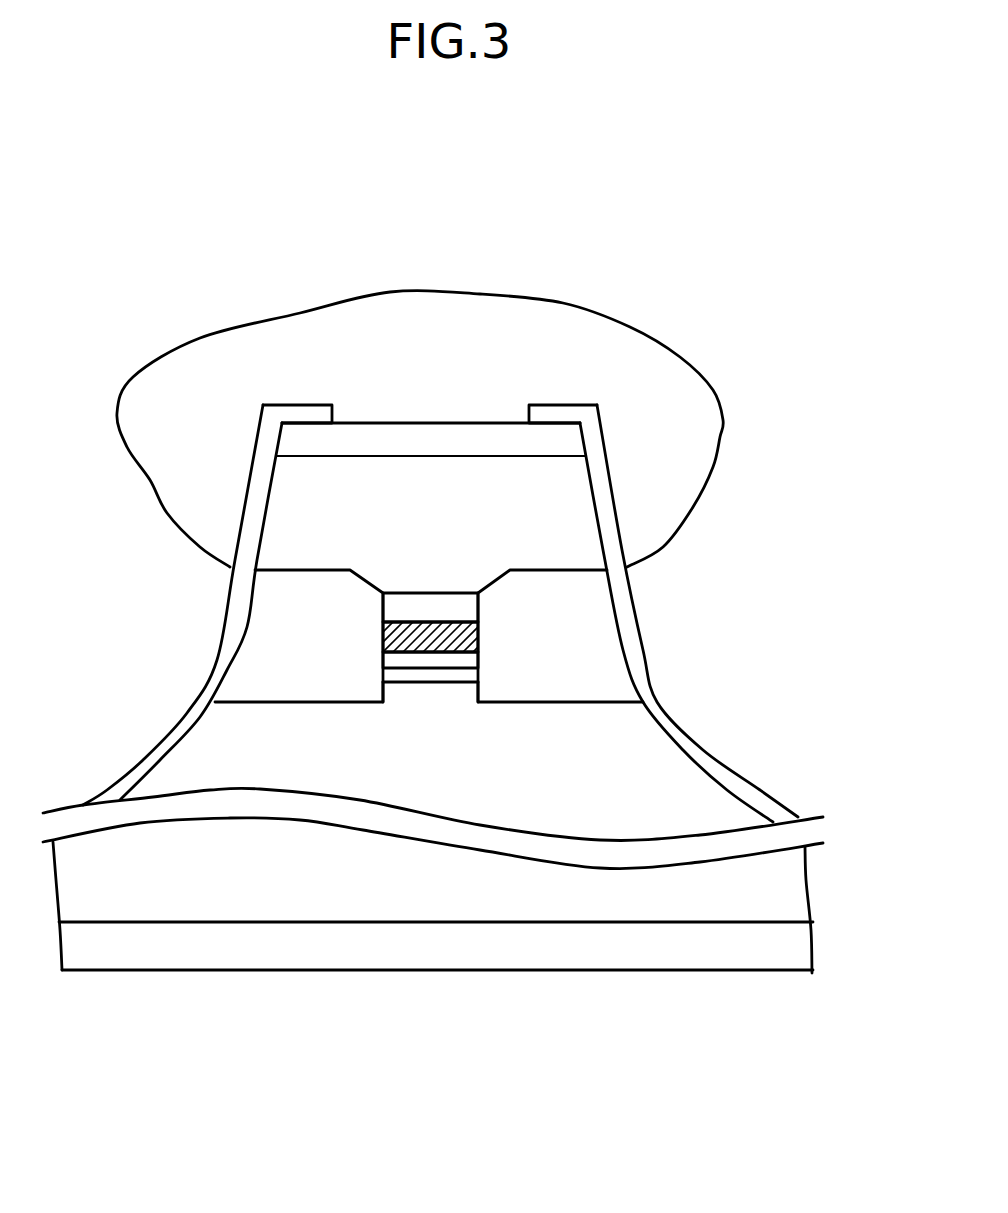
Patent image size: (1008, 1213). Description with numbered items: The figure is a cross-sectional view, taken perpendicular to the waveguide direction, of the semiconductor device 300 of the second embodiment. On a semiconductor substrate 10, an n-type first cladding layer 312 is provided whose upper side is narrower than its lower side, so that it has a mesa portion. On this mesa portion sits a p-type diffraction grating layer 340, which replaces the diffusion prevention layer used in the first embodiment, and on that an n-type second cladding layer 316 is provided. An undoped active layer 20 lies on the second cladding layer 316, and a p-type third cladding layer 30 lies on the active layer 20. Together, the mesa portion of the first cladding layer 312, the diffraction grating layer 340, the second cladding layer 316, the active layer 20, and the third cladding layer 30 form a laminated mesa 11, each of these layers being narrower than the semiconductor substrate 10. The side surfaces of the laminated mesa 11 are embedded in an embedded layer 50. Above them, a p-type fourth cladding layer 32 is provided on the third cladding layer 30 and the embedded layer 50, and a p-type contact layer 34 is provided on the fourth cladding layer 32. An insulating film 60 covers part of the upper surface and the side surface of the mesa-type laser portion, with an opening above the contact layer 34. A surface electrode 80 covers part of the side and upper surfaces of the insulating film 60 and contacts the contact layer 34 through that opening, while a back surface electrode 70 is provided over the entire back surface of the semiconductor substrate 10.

The semiconductor device 300 is at (75, 249).
The surface electrode 80 is at (430, 315).
The insulating film 60 is at (558, 415).
The contact layer 34 is at (558, 442).
The fourth cladding layer 32 is at (553, 508).
The third cladding layer 30 is at (465, 610).
The active layer 20 is at (480, 638).
The embedded layer 50 is at (287, 620).
The second cladding layer 316 is at (393, 658).
The diffraction grating layer 340 is at (407, 687).
The first cladding layer 312 is at (660, 760).
The laminated mesa 11 is at (370, 606).
The semiconductor substrate 10 is at (790, 893).
The back surface electrode 70 is at (440, 970).